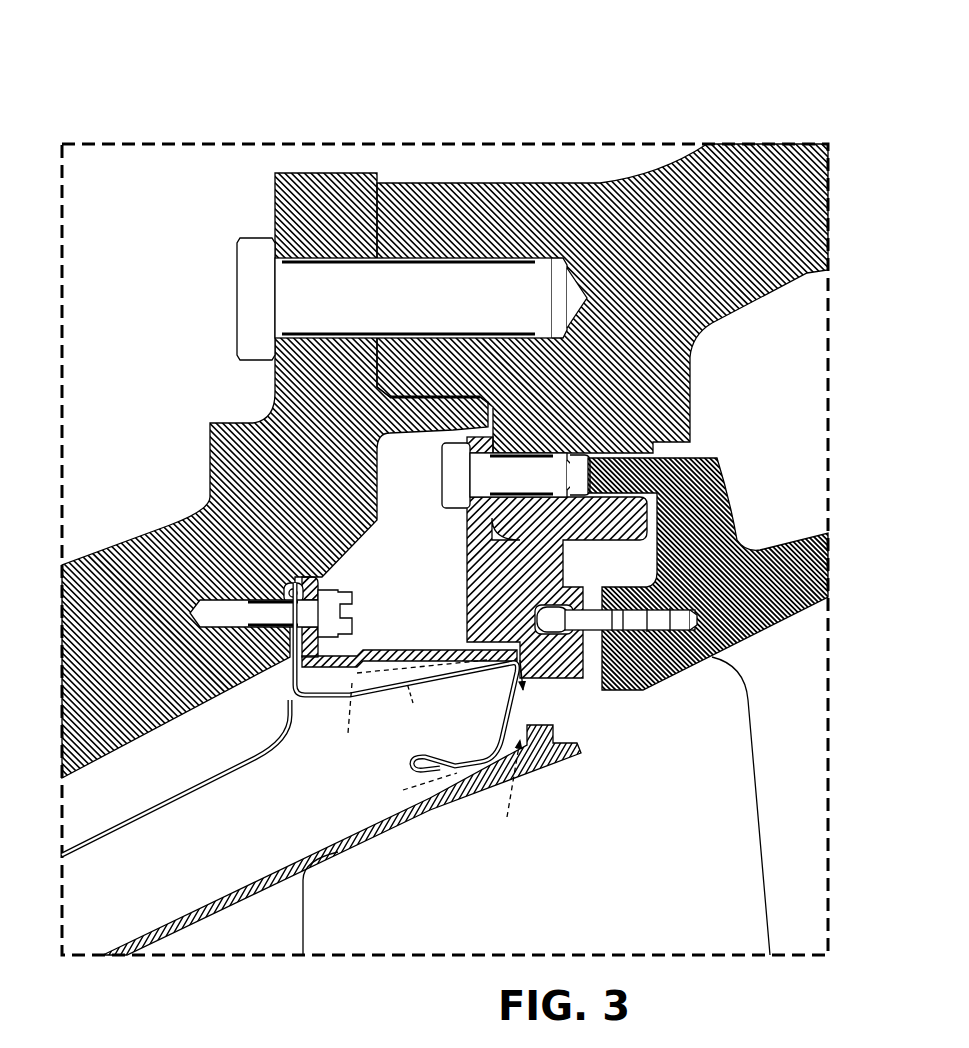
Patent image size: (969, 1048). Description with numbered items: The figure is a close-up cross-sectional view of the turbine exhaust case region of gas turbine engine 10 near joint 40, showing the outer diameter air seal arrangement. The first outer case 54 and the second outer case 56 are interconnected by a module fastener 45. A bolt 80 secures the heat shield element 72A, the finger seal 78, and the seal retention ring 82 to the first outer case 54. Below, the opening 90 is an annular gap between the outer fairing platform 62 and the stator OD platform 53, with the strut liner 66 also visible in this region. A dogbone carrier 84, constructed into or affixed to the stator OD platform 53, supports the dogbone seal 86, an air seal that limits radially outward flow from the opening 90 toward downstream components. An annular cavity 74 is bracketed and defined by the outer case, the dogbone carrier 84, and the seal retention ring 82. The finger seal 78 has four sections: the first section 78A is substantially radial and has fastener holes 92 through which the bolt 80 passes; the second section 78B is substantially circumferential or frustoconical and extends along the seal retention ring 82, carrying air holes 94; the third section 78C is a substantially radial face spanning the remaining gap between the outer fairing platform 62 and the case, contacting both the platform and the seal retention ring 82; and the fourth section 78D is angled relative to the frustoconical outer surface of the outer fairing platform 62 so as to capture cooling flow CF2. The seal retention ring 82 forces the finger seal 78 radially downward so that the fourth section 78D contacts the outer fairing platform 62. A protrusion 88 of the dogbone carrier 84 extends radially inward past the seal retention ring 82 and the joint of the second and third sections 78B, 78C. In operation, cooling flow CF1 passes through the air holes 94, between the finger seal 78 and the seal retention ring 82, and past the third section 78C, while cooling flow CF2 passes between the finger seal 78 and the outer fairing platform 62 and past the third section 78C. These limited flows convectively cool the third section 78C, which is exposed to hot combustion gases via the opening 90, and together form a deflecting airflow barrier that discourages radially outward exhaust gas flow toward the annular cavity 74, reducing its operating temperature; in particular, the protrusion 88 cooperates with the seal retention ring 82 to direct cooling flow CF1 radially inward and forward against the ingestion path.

The gas turbine engine 10 is at (668, 94).
The joint 40 is at (389, 150).
The module fastener 45 is at (247, 300).
The stator OD platform 53 is at (775, 572).
The first outer case 54 is at (165, 555).
The second outer case 56 is at (457, 192).
The outer fairing platform 62 is at (442, 802).
The strut liner 66 is at (357, 922).
The heat shield element 72A is at (210, 782).
The annular cavity 74 is at (418, 563).
The finger seal 78 is at (364, 712).
The first section 78A is at (300, 688).
The second section 78B is at (378, 690).
The third section 78C is at (503, 704).
The fourth section 78D is at (461, 758).
The bolt 80 is at (334, 608).
The seal retention ring 82 is at (420, 648).
The dogbone carrier 84 is at (514, 615).
The dogbone seal 86 is at (593, 632).
The protrusion 88 is at (538, 672).
The opening 90 is at (645, 718).
The fastener holes 92 is at (306, 588).
The air holes 94 is at (352, 693).
The cooling flow CF1 is at (422, 689).
The cooling flow CF2 is at (463, 753).